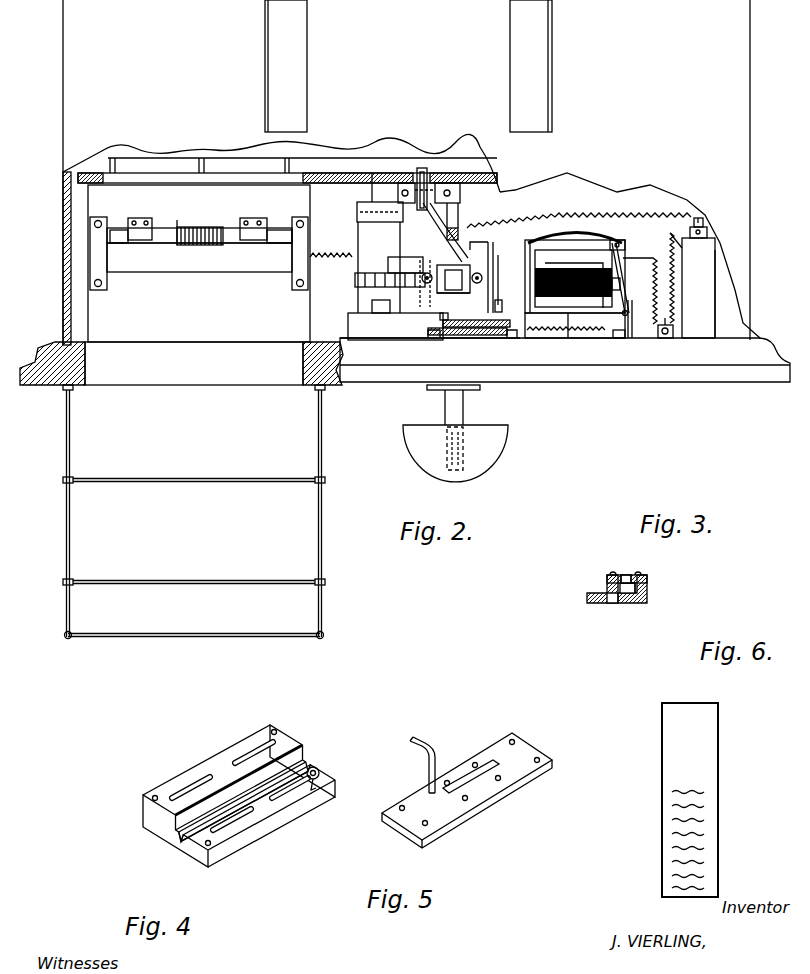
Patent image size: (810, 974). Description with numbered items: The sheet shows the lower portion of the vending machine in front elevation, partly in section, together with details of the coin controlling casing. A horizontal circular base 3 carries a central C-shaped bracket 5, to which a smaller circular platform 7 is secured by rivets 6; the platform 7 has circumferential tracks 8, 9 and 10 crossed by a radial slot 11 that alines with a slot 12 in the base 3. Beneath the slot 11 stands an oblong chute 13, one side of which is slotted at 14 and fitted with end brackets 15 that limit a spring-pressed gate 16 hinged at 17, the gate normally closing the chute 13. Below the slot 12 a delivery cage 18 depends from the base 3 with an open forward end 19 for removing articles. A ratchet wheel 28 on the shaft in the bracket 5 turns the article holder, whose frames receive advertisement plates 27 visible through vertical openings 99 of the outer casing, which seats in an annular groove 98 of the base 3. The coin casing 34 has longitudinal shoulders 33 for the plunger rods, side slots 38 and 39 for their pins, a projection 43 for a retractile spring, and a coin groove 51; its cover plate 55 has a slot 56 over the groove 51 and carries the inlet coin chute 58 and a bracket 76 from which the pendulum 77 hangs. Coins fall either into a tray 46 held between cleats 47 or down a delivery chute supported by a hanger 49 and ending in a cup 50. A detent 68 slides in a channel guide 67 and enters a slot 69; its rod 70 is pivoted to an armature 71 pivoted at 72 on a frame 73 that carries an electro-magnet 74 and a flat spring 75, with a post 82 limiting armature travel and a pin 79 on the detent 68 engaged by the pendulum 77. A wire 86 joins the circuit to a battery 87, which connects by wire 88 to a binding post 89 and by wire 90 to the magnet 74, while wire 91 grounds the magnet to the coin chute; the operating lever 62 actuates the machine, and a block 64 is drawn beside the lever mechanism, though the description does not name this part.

In FIG. 3, the circular base 3 is at (590, 372).
In FIG. 2, the C-shaped bracket 5 is at (395, 320).
In FIG. 2, the rivets 6 is at (360, 192).
In FIG. 2, the circular platform 7 is at (337, 168).
In FIG. 2, the track 8 is at (112, 160).
In FIG. 2, the track 9 is at (204, 160).
In FIG. 2, the track 10 is at (290, 148).
In FIG. 2, the radially disposed slot 11 is at (242, 173).
In FIG. 2, the slot 12 is at (214, 363).
In FIG. 2, the oblong chute 13 is at (199, 263).
In FIG. 2, the slot 14 is at (195, 262).
In FIG. 2, the exterior end brackets 15 is at (105, 266).
In FIG. 2, the spring-pressed gate 16 is at (170, 244).
In FIG. 2, the hinge 17 is at (142, 220).
In FIG. 2, the delivery cage 18 is at (323, 514).
In FIG. 2, the open forward end 19 is at (166, 578).
In FIG. 5, the advertisement plate 27 is at (662, 814).
In FIG. 2, the ratchet wheel 28 is at (372, 273).
In FIG. 6, the longitudinal shoulders 33 is at (607, 604).
In FIG. 4, the longitudinal shoulders 33 is at (147, 828).
In FIG. 6, the casing 34 is at (603, 588).
In FIG. 4, the casing 34 is at (239, 796).
In FIG. 4, the slot 38 is at (285, 770).
In FIG. 4, the slot 39 is at (220, 818).
In FIG. 4, the projection 43 is at (319, 771).
In FIG. 2, the tray 46 is at (470, 336).
In FIG. 2, the cleats 47 is at (430, 338).
In FIG. 2, the hanger 49 is at (465, 406).
In FIG. 2, the cup 50 is at (455, 453).
In FIG. 6, the longitudinal coin groove 51 is at (627, 596).
In FIG. 4, the longitudinal coin groove 51 is at (172, 840).
In FIG. 6, the cover plate 55 is at (648, 576).
In FIG. 5, the cover plate 55 is at (480, 790).
In FIG. 6, the longitudinal slot 56 is at (624, 572).
In FIG. 5, the longitudinal slot 56 is at (468, 775).
In FIG. 2, the inlet coin chute 58 is at (440, 186).
In FIG. 2, the operating lever 62 is at (405, 213).
In FIG. 2, the block 64 is at (452, 279).
In FIG. 2, the channel guide 67 is at (493, 343).
In FIG. 2, the detent 68 is at (474, 320).
In FIG. 2, the slot 69 is at (443, 317).
In FIG. 3, the rod 70 is at (560, 316).
In FIG. 3, the armature 71 is at (630, 280).
In FIG. 3, the pivot 72 is at (626, 246).
In FIG. 3, the frame 73 is at (566, 248).
In FIG. 3, the electro-magnet 74 is at (584, 270).
In FIG. 3, the flat spring 75 is at (556, 238).
In FIG. 2, the bracket 76 is at (460, 222).
In FIG. 5, the bracket 76 is at (425, 745).
In FIG. 2, the pendulum 77 is at (494, 252).
In FIG. 2, the pin 79 is at (499, 306).
In FIG. 3, the post 82 is at (647, 340).
In FIG. 2, the wire 86 is at (331, 263).
In FIG. 3, the wire 86 is at (575, 216).
In FIG. 3, the battery 87 is at (698, 278).
In FIG. 3, the wire 88 is at (715, 306).
In FIG. 3, the binding post 89 is at (673, 340).
In FIG. 3, the wire 90 is at (652, 278).
In FIG. 2, the wire 91 is at (548, 396).
In FIG. 2, the annular groove 98 is at (62, 343).
In FIG. 2, the vertical openings 99 is at (297, 28).